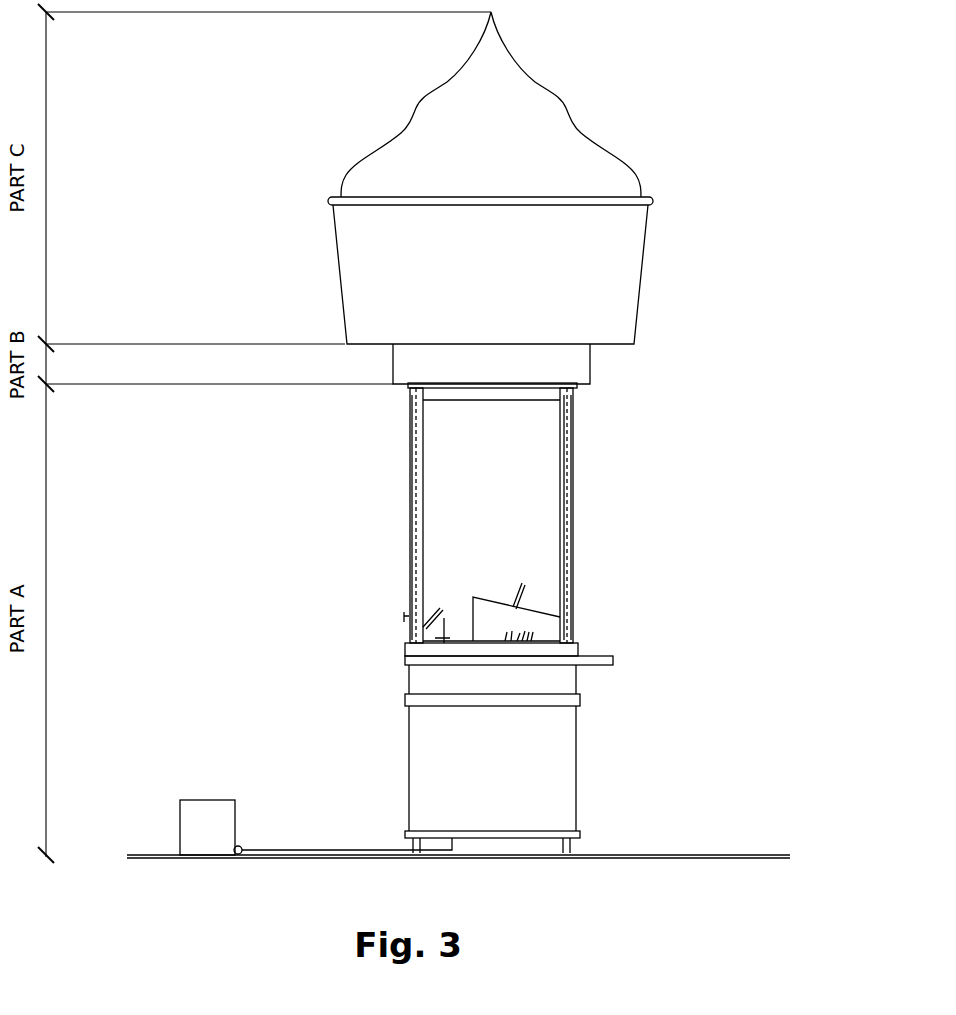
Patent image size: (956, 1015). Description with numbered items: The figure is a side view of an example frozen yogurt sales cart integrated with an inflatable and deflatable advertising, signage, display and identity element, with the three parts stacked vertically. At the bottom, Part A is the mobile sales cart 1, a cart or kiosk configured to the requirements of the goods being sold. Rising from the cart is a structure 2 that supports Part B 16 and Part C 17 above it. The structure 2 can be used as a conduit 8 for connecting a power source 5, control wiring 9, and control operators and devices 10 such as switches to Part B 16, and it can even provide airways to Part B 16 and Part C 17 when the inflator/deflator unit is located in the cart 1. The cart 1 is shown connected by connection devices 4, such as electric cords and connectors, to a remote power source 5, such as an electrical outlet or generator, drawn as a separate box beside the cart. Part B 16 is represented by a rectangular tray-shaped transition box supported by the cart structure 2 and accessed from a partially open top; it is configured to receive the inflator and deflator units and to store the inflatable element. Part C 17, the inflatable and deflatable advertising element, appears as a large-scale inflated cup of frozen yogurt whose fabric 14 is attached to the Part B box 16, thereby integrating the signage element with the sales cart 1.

The mobile sales cart 1 is at (493, 677).
The structure 2 is at (576, 387).
The connection devices 4 is at (388, 848).
The remote power source 5 is at (207, 800).
The conduit 8 is at (417, 500).
The control wiring 9 is at (567, 500).
The control operators and devices 10 is at (404, 614).
The Part C fabric 14 is at (576, 119).
The Part B transition box 16 is at (422, 360).
The Part C inflatable and deflatable advertising/signage/display/identity element 17 is at (481, 124).